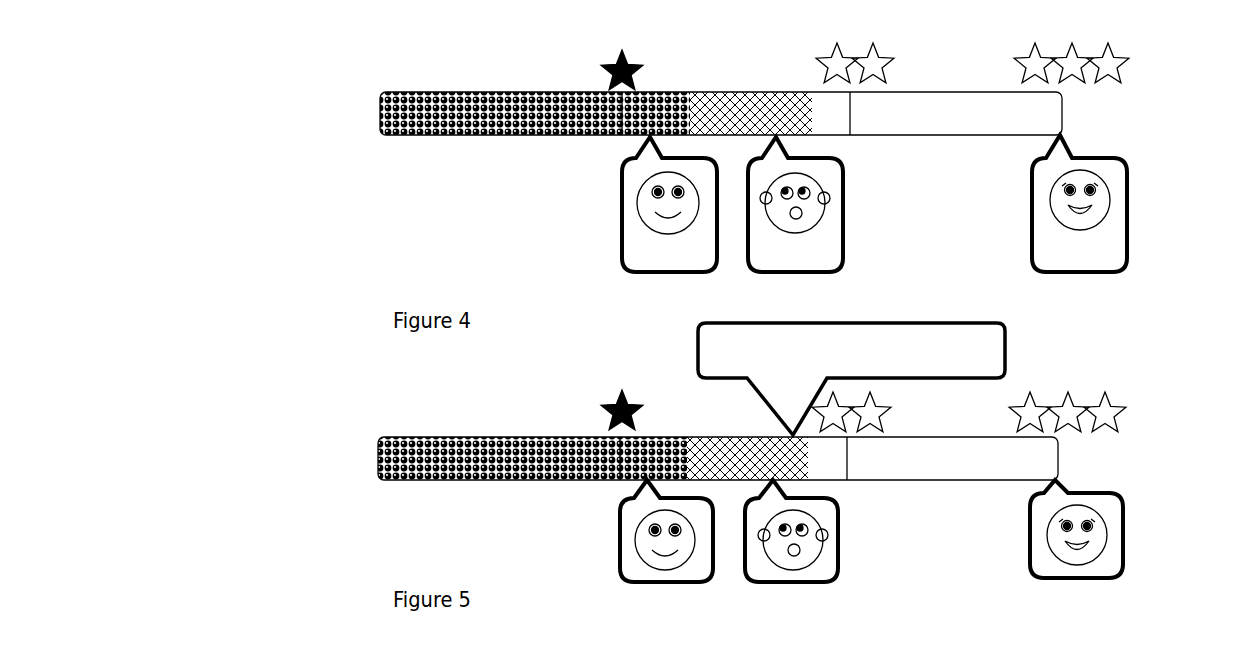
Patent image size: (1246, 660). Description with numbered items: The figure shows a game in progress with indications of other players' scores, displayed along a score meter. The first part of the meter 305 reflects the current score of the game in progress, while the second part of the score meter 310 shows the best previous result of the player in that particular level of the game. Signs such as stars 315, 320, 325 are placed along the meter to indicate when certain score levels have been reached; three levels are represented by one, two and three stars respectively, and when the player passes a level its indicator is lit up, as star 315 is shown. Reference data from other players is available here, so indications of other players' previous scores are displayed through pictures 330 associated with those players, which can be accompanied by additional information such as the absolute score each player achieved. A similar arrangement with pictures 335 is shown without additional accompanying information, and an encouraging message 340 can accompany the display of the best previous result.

In FIG. 4, the first part of the meter 305 is at (540, 135).
In FIG. 5, the first part of the meter 305 is at (525, 480).
In FIG. 4, the second part of the score meter 310 is at (772, 92).
In FIG. 5, the second part of the score meter 310 is at (723, 437).
In FIG. 4, the star 315 is at (610, 68).
In FIG. 5, the star 315 is at (608, 410).
In FIG. 4, the stars 320 is at (890, 62).
In FIG. 5, the stars 320 is at (890, 412).
In FIG. 4, the stars 325 is at (1122, 60).
In FIG. 5, the stars 325 is at (1118, 410).
In FIG. 4, the pictures 330 is at (622, 213).
In FIG. 5, the competitor avatar 335 is at (620, 540).
In FIG. 5, the encouraging message 340 is at (852, 323).